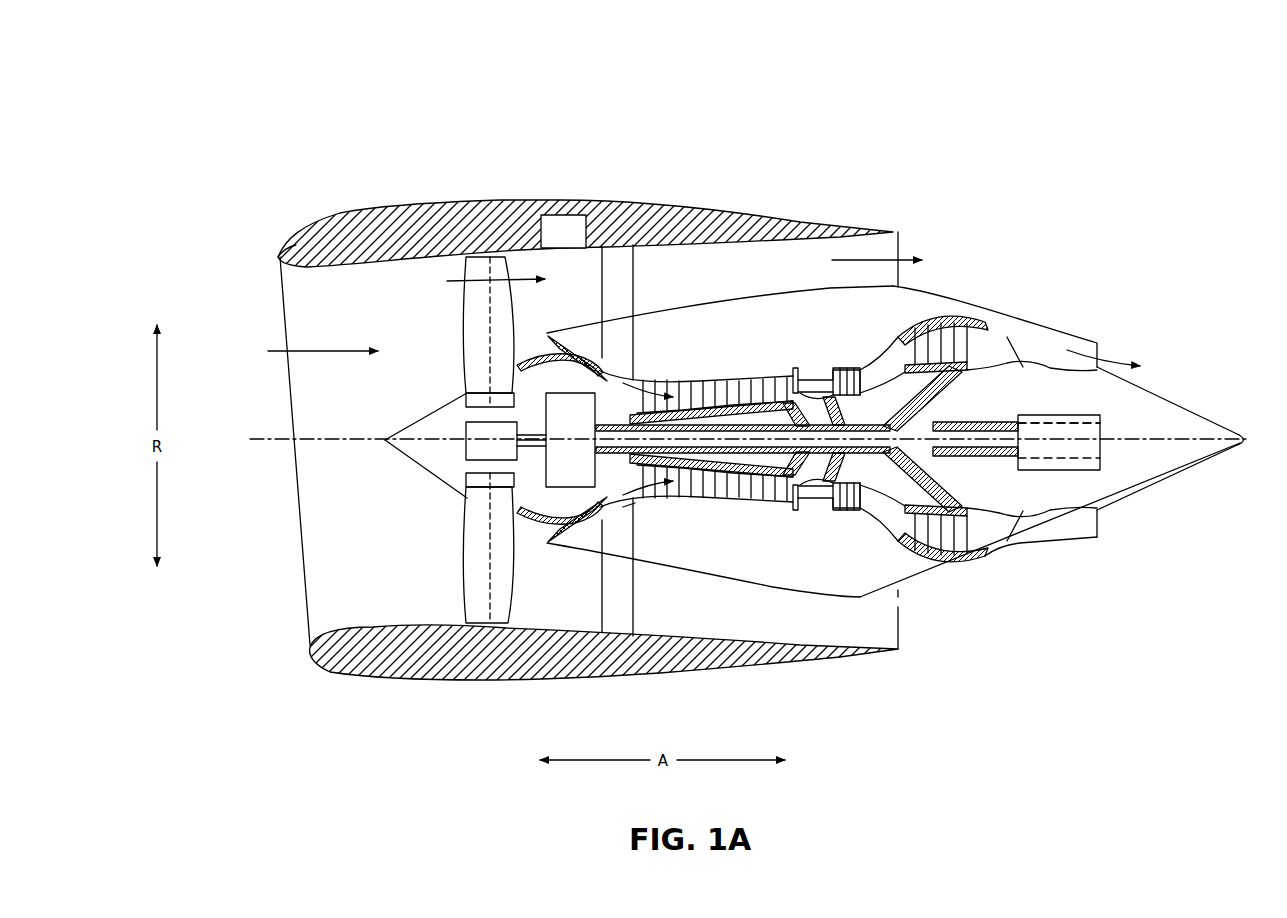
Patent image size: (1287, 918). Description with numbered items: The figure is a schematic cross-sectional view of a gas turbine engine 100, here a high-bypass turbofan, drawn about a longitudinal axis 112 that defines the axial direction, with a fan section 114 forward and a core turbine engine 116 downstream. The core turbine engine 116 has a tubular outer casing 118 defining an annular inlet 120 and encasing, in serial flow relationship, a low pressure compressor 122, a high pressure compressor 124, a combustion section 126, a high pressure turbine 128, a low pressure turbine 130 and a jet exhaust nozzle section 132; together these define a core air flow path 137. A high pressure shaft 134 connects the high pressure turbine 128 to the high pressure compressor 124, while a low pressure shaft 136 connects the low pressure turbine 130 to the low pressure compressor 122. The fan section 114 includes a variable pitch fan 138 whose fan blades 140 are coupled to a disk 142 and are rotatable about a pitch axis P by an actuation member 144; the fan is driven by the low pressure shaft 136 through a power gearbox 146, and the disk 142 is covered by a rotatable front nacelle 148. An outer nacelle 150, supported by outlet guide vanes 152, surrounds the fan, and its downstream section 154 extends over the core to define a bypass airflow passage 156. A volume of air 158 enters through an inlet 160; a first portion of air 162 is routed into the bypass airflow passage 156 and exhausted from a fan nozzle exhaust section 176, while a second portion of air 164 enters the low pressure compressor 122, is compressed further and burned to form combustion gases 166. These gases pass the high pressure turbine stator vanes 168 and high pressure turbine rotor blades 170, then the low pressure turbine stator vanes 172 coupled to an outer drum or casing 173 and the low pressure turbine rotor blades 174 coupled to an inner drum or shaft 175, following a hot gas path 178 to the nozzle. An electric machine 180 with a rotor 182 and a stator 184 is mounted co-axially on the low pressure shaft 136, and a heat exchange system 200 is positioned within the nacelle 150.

The gas turbine engine 100 is at (1040, 210).
The longitudinal axis 112 is at (1210, 450).
The fan section 114 is at (487, 168).
The core turbine engine 116 is at (787, 337).
The outer casing 118 is at (780, 588).
The annular inlet 120 is at (547, 538).
The low pressure compressor 122 is at (600, 507).
The high pressure compressor 124 is at (660, 500).
The combustion section 126 is at (800, 497).
The high pressure turbine 128 is at (883, 512).
The low pressure turbine 130 is at (970, 567).
The jet exhaust nozzle section 132 is at (1037, 540).
The high pressure shaft 134 is at (833, 410).
The low pressure shaft 136 is at (928, 412).
The core air flow path 137 is at (623, 507).
The variable pitch fan 138 is at (442, 488).
The fan blades 140 is at (462, 573).
The disk 142 is at (480, 403).
The actuation member 144 is at (467, 432).
The power gearbox 146 is at (587, 397).
The front nacelle 148 is at (397, 459).
The outer nacelle 150 is at (503, 683).
The outlet guide vanes 152 is at (637, 275).
The downstream section of the nacelle 154 is at (848, 221).
The bypass airflow passage 156 is at (722, 277).
The volume of air 158 is at (338, 350).
The inlet 160 is at (309, 636).
The first portion of air 162 is at (462, 280).
The second portion of air 164 is at (553, 337).
The combustion gases 166 is at (950, 337).
The HP turbine stator vanes 168 is at (830, 508).
The HP turbine rotor blades 170 is at (845, 490).
The LP turbine stator vanes 172 is at (898, 590).
The outer drum or casing 173 is at (960, 313).
The LP turbine rotor blades 174 is at (910, 550).
The inner drum or shaft 175 is at (933, 368).
The fan nozzle exhaust section 176 is at (897, 247).
The hot gas path 178 is at (890, 347).
The electric machine 180 is at (1093, 488).
The rotor 182 is at (847, 258).
The stator 184 is at (1053, 413).
The heat exchange system 200 is at (567, 213).
The pitch axis P is at (492, 267).